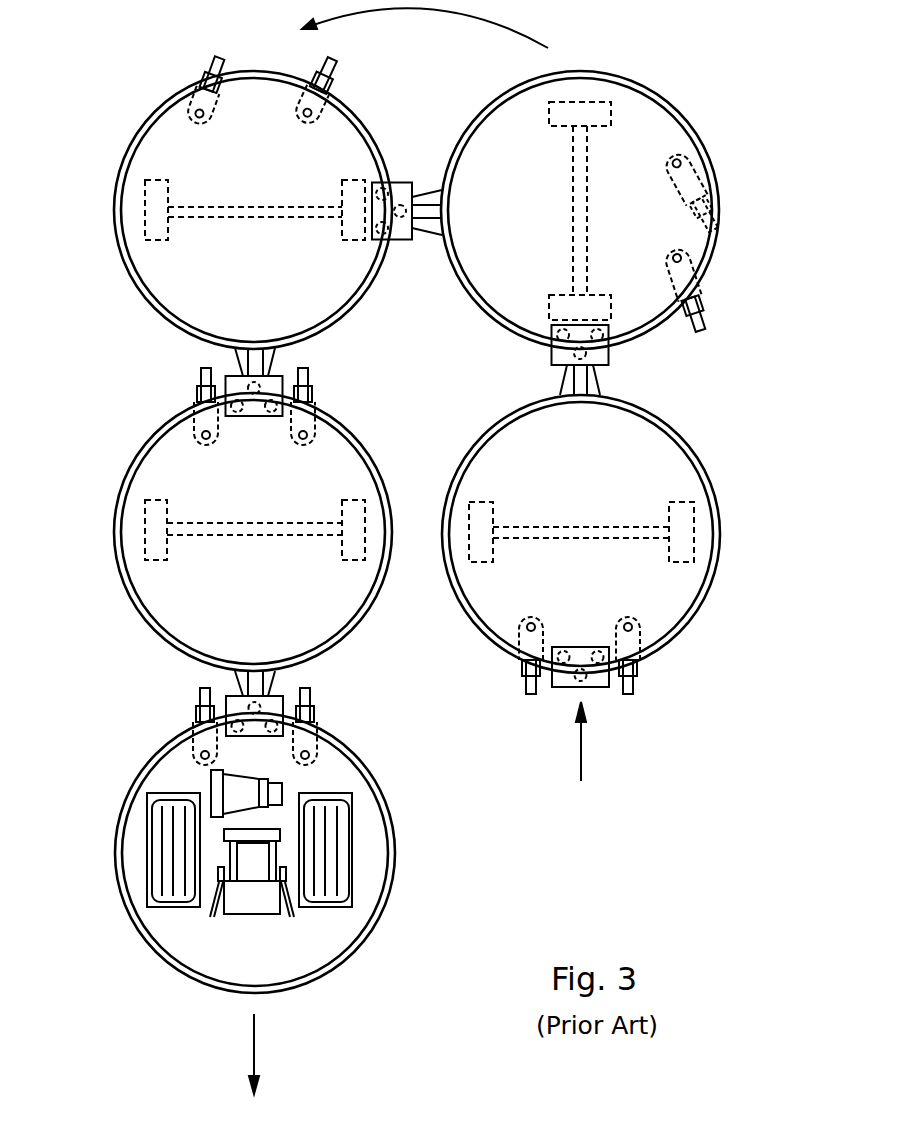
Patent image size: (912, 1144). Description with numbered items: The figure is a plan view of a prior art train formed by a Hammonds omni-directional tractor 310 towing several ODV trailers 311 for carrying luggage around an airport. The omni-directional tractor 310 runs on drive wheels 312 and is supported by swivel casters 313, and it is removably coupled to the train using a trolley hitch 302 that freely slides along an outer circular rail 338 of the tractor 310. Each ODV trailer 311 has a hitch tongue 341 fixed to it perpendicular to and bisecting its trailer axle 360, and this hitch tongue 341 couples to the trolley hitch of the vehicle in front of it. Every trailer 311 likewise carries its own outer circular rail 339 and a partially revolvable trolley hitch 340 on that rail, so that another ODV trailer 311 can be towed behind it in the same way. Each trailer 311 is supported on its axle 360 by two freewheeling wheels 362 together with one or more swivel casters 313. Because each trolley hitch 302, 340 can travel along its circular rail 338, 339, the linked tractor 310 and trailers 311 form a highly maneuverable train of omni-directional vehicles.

The trolley hitch 302 is at (282, 708).
The omni-directional tractor 310 is at (168, 938).
The ODV trailer 311 is at (170, 278).
The drive wheels 312 is at (147, 872).
The swivel casters 313 is at (222, 72).
The outer circular rail 338 is at (131, 788).
The outer circular rail 339 is at (117, 243).
The trolley hitch 340 is at (394, 180).
The hitch tongue 341 is at (428, 233).
The trailer axle 360 is at (240, 218).
The freewheeling wheels 362 is at (150, 180).